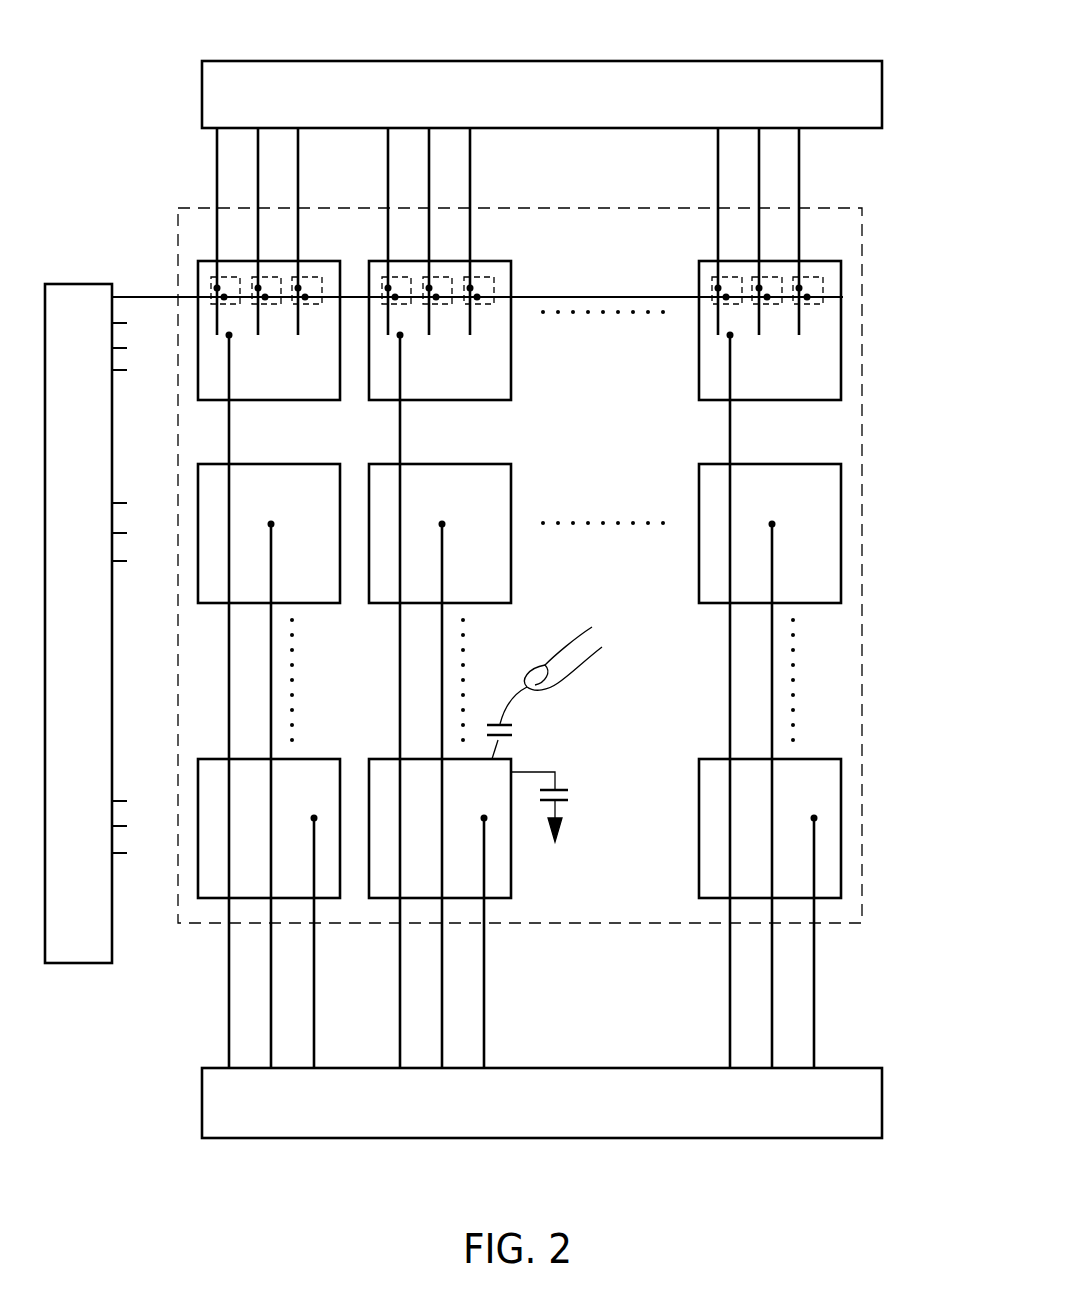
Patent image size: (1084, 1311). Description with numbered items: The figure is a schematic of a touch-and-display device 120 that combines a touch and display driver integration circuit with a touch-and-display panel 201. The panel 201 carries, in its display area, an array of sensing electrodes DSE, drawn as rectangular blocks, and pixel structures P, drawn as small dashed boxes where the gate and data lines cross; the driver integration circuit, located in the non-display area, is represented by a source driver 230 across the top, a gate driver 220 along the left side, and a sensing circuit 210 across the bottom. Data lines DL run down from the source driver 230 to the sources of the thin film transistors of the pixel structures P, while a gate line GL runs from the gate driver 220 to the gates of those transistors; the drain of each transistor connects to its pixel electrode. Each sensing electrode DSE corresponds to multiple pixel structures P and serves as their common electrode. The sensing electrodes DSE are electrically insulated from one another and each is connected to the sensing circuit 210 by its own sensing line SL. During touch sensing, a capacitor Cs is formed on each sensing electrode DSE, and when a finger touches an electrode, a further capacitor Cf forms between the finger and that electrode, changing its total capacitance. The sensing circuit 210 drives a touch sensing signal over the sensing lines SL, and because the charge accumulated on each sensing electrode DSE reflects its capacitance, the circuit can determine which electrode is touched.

The touch-and-display device 120 is at (117, 31).
The source driver 230 is at (202, 93).
The gate driver 220 is at (75, 963).
The sensing circuit 210 is at (662, 1117).
The touch-and-display panel 201 is at (862, 670).
The data line DL is at (217, 158).
The gate line GL is at (137, 296).
The pixel structure P is at (230, 277).
The sensing electrode DSE is at (295, 400).
The sensing line SL is at (314, 1022).
The capacitor Cf is at (544, 693).
The capacitor Cs is at (561, 807).